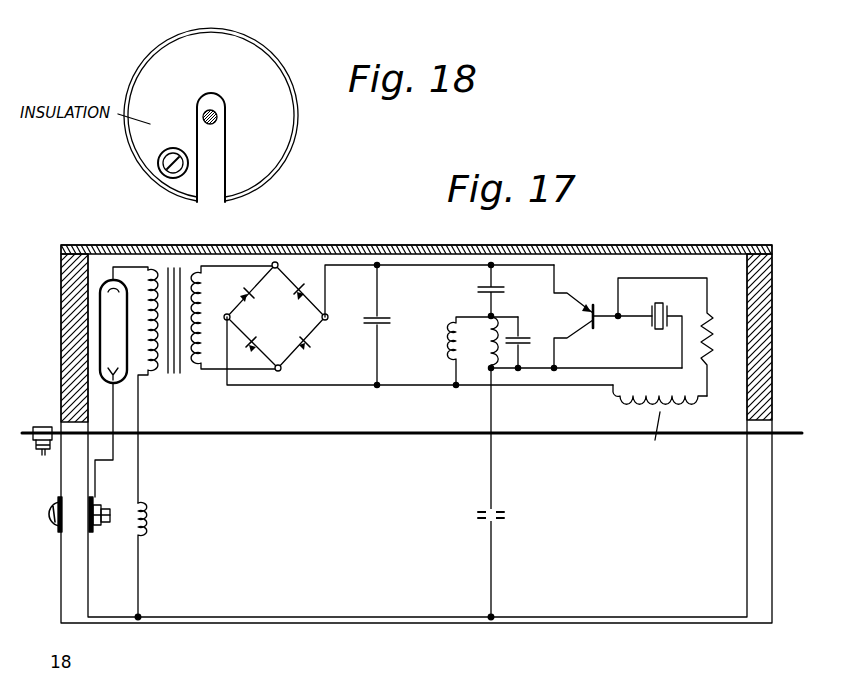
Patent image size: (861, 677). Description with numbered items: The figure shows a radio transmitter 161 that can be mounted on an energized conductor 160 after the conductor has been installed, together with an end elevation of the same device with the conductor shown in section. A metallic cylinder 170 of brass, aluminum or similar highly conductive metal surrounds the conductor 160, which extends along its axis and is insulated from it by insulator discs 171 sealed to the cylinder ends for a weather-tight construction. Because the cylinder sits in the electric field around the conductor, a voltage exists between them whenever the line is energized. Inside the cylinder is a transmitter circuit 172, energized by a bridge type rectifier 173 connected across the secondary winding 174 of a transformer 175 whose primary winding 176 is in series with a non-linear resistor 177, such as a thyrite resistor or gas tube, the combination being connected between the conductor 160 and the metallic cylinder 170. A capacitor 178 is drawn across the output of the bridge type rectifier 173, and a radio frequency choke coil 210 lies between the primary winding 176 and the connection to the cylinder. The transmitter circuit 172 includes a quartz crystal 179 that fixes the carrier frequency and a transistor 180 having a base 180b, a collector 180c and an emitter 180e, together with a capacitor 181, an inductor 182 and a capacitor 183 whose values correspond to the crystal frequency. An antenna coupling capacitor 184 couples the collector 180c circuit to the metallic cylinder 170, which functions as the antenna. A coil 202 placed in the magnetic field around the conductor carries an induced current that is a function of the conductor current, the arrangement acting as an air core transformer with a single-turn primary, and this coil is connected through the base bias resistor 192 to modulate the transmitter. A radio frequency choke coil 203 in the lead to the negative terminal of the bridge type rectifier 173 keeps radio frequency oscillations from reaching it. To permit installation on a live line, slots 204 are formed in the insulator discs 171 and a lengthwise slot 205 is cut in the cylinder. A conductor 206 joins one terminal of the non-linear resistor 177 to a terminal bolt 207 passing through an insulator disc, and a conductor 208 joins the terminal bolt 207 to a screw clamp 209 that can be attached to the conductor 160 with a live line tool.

In FIG. 18, the conductor 160 is at (203, 107).
In FIG. 17, the conductor 160 is at (412, 401).
In FIG. 18, the radio transmitter 161 is at (300, 86).
In FIG. 17, the radio transmitter 161 is at (112, 236).
In FIG. 18, the metallic cylinder 170 is at (295, 142).
In FIG. 17, the metallic cylinder 170 is at (357, 244).
In FIG. 18, the insulator discs 171 is at (248, 53).
In FIG. 17, the insulator discs 171 is at (62, 323).
In FIG. 17, the transmitter circuit 172 is at (441, 395).
In FIG. 17, the bridge type rectifier 173 is at (356, 342).
In FIG. 17, the secondary winding 174 is at (221, 284).
In FIG. 17, the transformer 175 is at (187, 385).
In FIG. 17, the primary winding 176 is at (150, 268).
In FIG. 17, the non-linear resistor 177 is at (100, 307).
In FIG. 17, the filter capacitor 178 is at (391, 320).
In FIG. 17, the quartz crystal 179 is at (659, 300).
In FIG. 17, the transistor 180 is at (607, 283).
In FIG. 17, the base 180b is at (598, 326).
In FIG. 17, the collector 180c is at (588, 328).
In FIG. 17, the emitter 180e is at (587, 303).
In FIG. 17, the capacitor 181 is at (504, 291).
In FIG. 17, the inductor 182 is at (483, 322).
In FIG. 17, the capacitor 183 is at (541, 329).
In FIG. 17, the antenna coupling capacitor 184 is at (505, 516).
In FIG. 17, the base bias resistor 192 is at (709, 326).
In FIG. 17, the coil 202 is at (684, 394).
In FIG. 17, the radio frequency choke coil 203 is at (445, 341).
In FIG. 18, the slots 204 is at (215, 145).
In FIG. 17, the slots 204 is at (73, 550).
In FIG. 18, the slot 205 is at (212, 205).
In FIG. 17, the slot 205 is at (118, 621).
In FIG. 17, the conductor 206 is at (117, 451).
In FIG. 17, the terminal bolt 207 is at (53, 526).
In FIG. 17, the conductor 208 is at (57, 460).
In FIG. 17, the screw clamp 209 is at (44, 426).
In FIG. 17, the radio frequency choke coil 210 is at (152, 519).